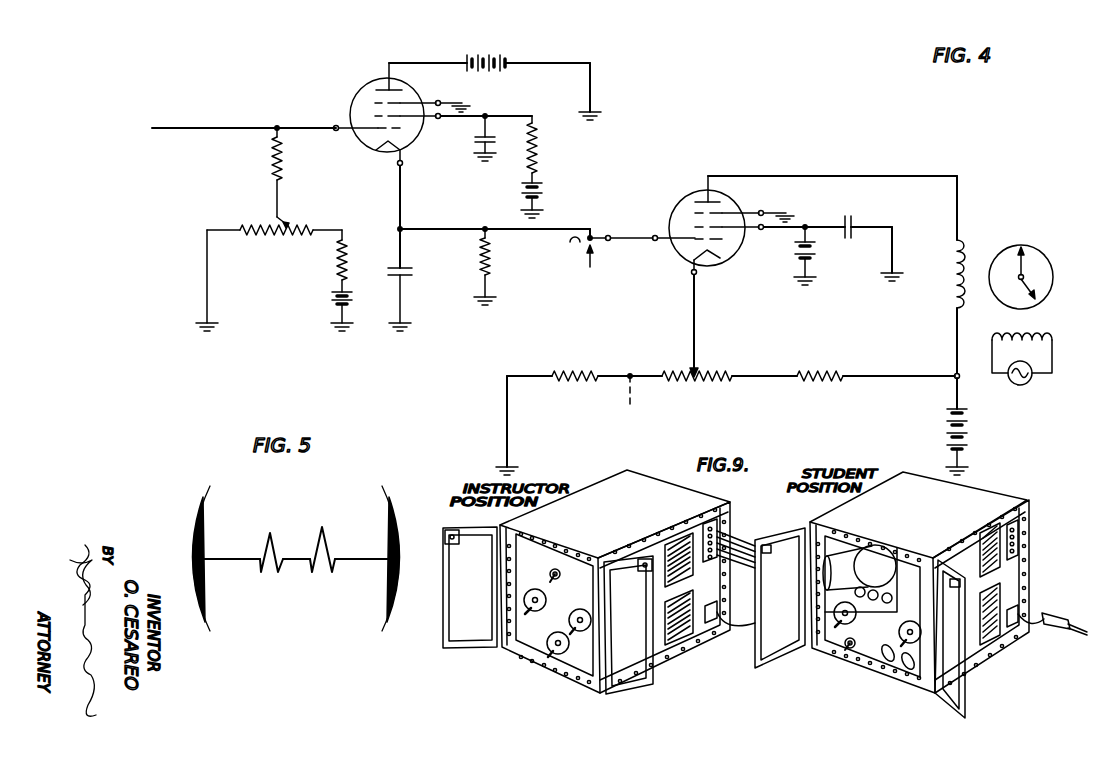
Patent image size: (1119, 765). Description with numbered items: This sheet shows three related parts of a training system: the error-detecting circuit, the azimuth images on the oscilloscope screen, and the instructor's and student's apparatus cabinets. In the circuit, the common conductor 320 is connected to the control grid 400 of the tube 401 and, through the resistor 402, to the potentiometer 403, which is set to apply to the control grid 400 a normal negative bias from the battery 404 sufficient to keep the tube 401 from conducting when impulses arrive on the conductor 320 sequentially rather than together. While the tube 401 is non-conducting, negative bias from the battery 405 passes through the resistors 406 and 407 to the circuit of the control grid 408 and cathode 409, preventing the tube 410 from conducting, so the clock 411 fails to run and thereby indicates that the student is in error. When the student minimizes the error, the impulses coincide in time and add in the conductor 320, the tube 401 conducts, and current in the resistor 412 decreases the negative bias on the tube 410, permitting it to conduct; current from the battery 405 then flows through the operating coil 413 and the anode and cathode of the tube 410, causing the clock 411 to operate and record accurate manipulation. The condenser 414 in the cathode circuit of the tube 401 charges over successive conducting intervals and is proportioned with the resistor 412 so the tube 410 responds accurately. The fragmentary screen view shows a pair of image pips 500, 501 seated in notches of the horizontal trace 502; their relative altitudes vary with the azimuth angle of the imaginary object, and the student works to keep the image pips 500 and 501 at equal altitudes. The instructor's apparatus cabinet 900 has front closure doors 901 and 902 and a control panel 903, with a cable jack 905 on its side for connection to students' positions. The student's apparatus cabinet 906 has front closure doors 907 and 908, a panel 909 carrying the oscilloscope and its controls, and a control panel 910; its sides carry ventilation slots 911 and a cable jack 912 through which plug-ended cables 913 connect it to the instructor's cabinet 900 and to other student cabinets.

In FIG. 4, the common conductor 320 is at (244, 128).
In FIG. 4, the control grid 400 is at (376, 128).
In FIG. 4, the tube 401 is at (357, 93).
In FIG. 4, the resistor 402 is at (283, 152).
In FIG. 4, the potentiometer 403 is at (287, 233).
In FIG. 4, the battery 404 is at (330, 298).
In FIG. 4, the battery 405 is at (971, 432).
In FIG. 4, the resistor 406 is at (711, 384).
In FIG. 4, the resistor 407 is at (592, 385).
In FIG. 4, the control grid 408 is at (697, 240).
In FIG. 4, the cathode 409 is at (708, 263).
In FIG. 4, the tube 410 is at (687, 198).
In FIG. 4, the clock 411 is at (1048, 266).
In FIG. 4, the resistor 412 is at (490, 277).
In FIG. 4, the operating coil 413 is at (948, 286).
In FIG. 4, the condenser 414 is at (428, 276).
In FIG. 5, the image pip 500 is at (282, 515).
In FIG. 5, the image pip 501 is at (334, 522).
In FIG. 5, the horizontal trace 502 is at (364, 560).
In FIG. 9, the apparatus cabinet 900 is at (545, 523).
In FIG. 9, the front closure door 901 is at (478, 631).
In FIG. 9, the front closure door 902 is at (632, 678).
In FIG. 9, the control panel 903 is at (543, 557).
In FIG. 9, the cable jack 905 is at (730, 518).
In FIG. 9, the apparatus cabinet 906 is at (980, 496).
In FIG. 9, the front closure door 907 is at (782, 642).
In FIG. 9, the front closure door 908 is at (950, 690).
In FIG. 9, the panel 909 is at (907, 563).
In FIG. 9, the control panel 910 is at (868, 649).
In FIG. 9, the ventilation slots 911 is at (1005, 608).
In FIG. 9, the cable jack 912 is at (1020, 525).
In FIG. 9, the plug-ended cables 913 is at (742, 547).